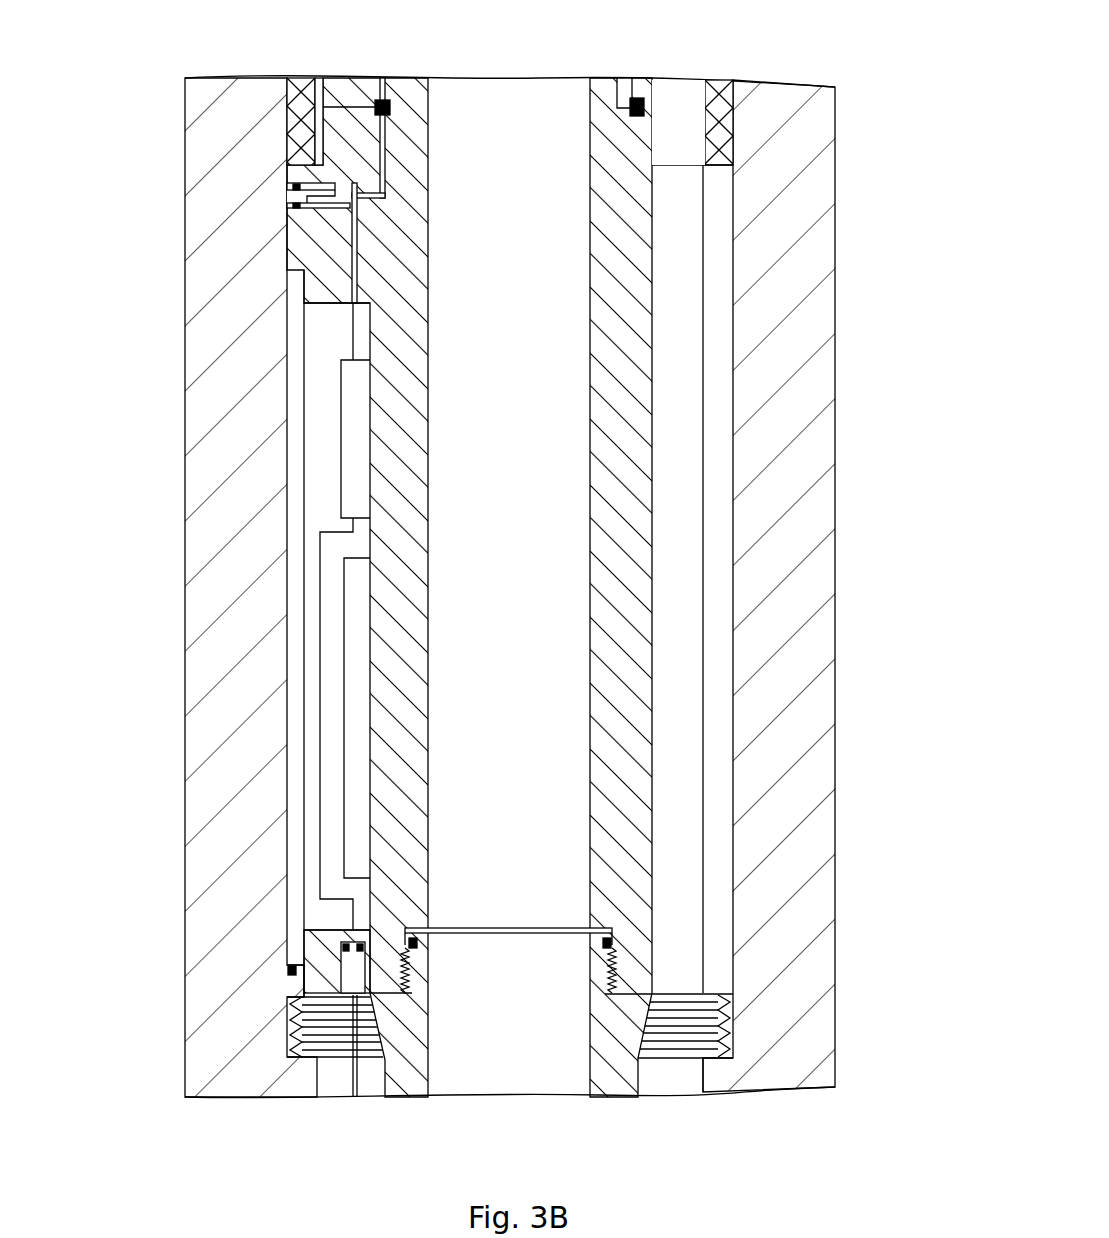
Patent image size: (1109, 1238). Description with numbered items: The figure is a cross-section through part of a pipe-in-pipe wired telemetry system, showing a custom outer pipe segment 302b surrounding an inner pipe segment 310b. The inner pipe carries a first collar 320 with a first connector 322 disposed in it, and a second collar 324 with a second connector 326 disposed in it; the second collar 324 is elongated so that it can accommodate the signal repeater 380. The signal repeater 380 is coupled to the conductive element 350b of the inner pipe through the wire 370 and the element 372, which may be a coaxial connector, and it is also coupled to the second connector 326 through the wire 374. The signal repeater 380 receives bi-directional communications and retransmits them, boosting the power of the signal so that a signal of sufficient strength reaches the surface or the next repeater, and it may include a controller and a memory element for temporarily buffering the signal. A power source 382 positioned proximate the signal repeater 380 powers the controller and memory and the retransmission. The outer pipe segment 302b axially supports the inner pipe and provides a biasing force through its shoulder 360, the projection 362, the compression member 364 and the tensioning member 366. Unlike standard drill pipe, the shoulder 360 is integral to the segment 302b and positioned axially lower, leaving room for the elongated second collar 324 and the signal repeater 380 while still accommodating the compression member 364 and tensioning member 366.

The outer pipe segment 302b is at (836, 358).
The inner pipe segment 310b is at (672, 1080).
The first collar 320 is at (394, 106).
The first connector 322 is at (638, 98).
The second collar 324 is at (652, 487).
The second connector 326 is at (643, 112).
The conductive element 350b is at (350, 1087).
The shoulder 360 is at (287, 1058).
The projection 362 is at (288, 967).
The compression member 364 is at (287, 1013).
The tensioning member 366 is at (283, 135).
The wire 370 is at (320, 680).
The element 372 is at (362, 967).
The wire 374 is at (357, 319).
The signal repeater 380 is at (341, 408).
The power source 382 is at (355, 750).